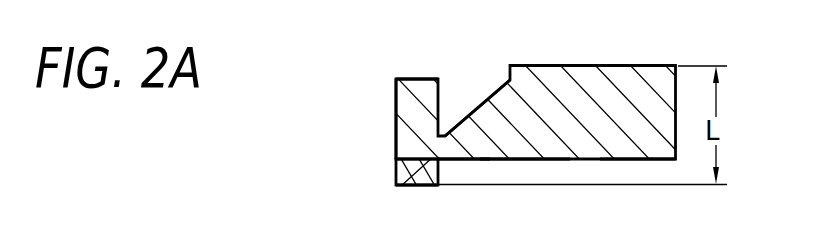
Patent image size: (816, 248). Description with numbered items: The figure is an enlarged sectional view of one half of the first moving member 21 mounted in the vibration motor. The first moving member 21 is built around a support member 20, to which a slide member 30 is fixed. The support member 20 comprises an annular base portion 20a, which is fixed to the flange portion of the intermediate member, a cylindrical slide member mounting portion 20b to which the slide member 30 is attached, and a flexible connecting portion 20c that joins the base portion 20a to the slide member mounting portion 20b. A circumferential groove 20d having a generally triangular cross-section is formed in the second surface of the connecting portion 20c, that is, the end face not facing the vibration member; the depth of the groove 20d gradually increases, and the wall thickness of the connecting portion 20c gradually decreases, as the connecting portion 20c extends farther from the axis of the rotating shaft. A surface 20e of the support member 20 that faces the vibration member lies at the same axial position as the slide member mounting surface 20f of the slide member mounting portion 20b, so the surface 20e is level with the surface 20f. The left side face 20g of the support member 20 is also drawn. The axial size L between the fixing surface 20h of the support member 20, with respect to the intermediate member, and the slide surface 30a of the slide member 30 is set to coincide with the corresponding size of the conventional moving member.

The first moving member 21 is at (312, 75).
The support member 20 is at (384, 106).
The slide member 30 is at (396, 170).
The annular base portion 20a is at (568, 95).
The slide member mounting portion 20b is at (421, 100).
The flexible connecting portion 20c is at (507, 110).
The circumferential groove 20d is at (462, 117).
The surface facing the vibration member 20e is at (642, 163).
The slide member mounting surface 20f is at (441, 163).
The left side face 20g is at (404, 78).
The fixing surface 20h is at (633, 64).
The slide surface 30a is at (415, 183).